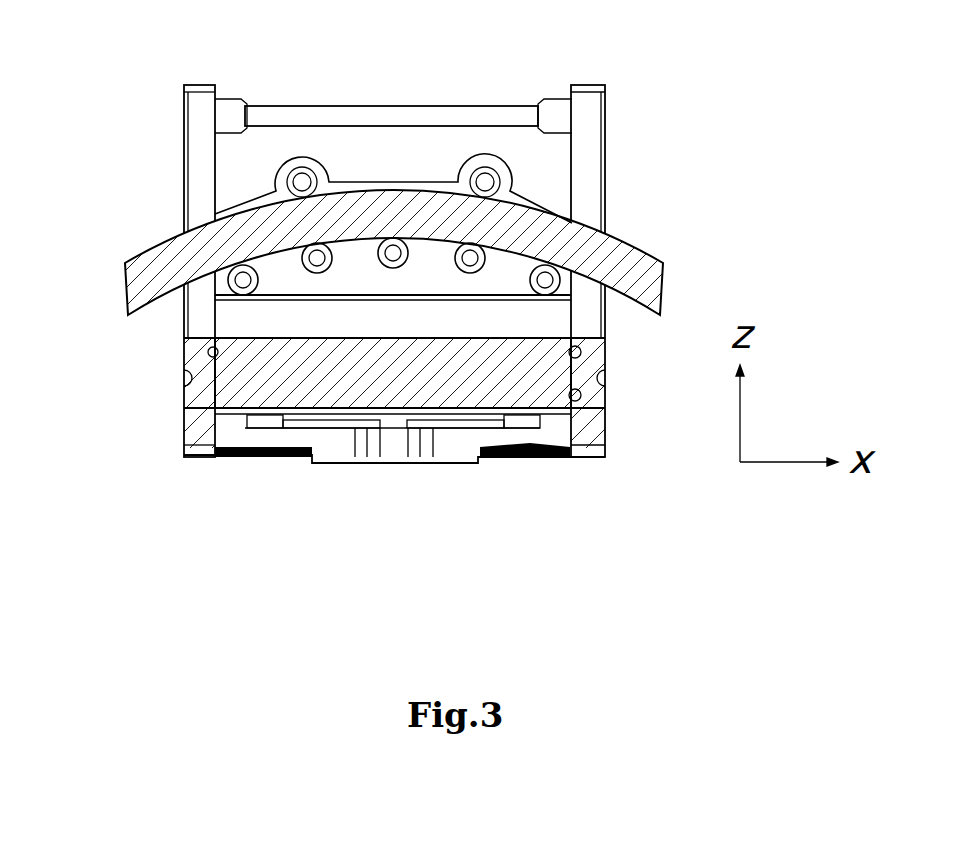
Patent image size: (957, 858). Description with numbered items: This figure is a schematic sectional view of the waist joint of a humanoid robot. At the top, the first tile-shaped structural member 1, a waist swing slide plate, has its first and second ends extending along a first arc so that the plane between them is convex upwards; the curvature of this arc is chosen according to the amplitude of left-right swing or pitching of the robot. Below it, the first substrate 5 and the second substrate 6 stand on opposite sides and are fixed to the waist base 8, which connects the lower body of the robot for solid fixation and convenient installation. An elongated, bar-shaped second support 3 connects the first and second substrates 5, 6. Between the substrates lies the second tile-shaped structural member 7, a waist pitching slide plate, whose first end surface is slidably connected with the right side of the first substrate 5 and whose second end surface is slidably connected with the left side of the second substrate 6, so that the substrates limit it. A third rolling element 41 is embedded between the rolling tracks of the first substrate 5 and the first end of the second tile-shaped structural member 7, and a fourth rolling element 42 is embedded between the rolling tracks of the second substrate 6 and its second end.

The first tile-shaped structural member 1 is at (208, 253).
The second support 3 is at (358, 117).
The first substrate 5 is at (198, 160).
The second substrate 6 is at (588, 160).
The second tile-shaped structural member 7 is at (530, 360).
The waist base 8 is at (598, 385).
The third rolling element 41 is at (217, 393).
The fourth rolling element 42 is at (460, 440).